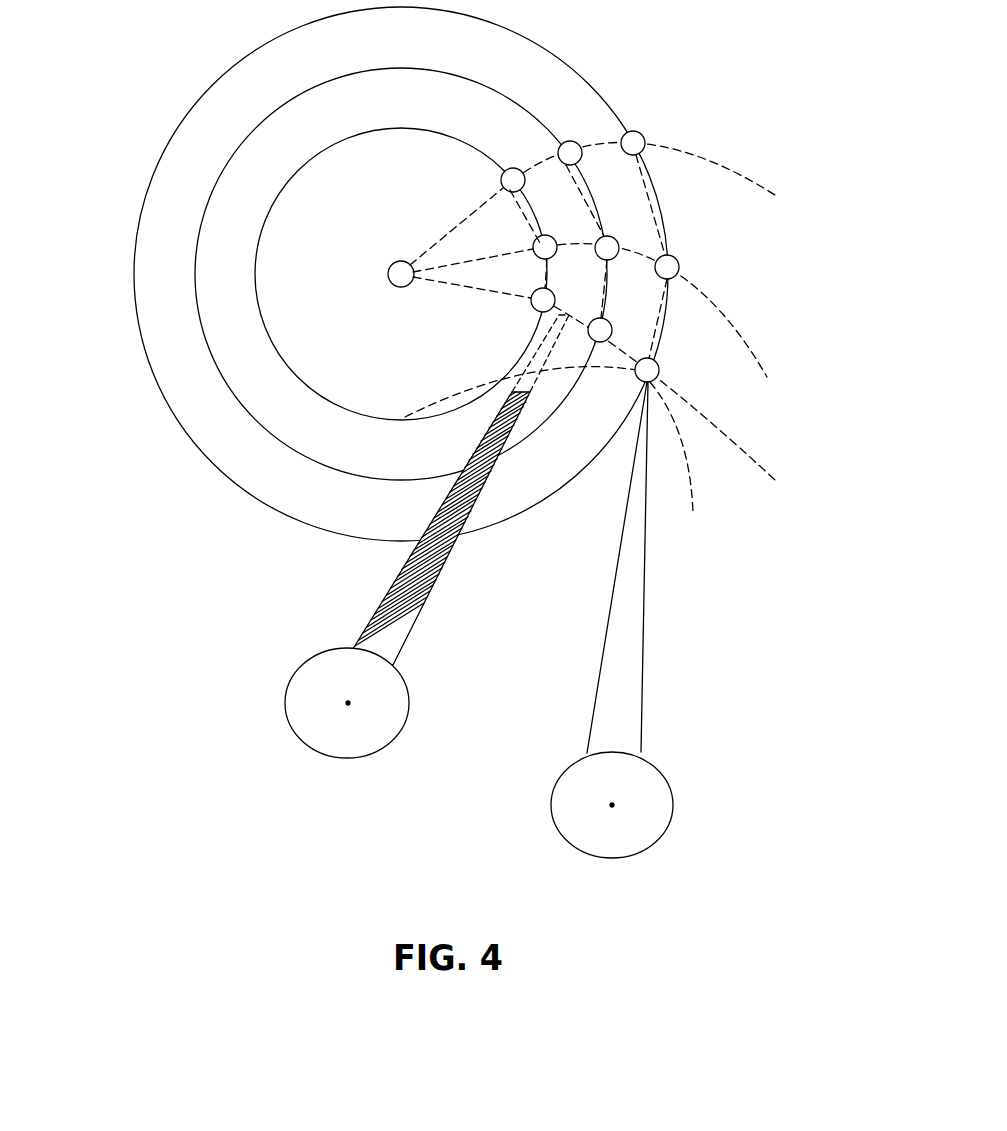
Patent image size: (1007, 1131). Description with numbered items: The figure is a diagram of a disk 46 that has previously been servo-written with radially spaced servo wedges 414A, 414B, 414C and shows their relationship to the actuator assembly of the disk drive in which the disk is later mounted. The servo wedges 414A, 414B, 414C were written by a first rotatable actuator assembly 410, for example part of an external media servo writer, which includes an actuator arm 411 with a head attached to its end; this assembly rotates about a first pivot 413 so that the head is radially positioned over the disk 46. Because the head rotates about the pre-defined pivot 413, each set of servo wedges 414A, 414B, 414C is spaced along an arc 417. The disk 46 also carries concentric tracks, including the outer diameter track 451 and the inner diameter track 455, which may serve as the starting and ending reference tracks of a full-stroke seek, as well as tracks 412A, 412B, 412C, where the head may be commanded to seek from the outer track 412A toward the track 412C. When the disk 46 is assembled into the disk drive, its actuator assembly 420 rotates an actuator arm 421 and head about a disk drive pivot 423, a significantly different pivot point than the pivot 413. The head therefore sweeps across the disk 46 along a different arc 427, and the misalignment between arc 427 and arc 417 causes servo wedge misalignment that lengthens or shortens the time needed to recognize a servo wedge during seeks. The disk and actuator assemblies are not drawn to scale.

The disk 46 is at (200, 56).
The outer diameter track 451 is at (147, 357).
The inner diameter track 455 is at (392, 262).
The arc 417 is at (487, 290).
The outer diameter track 412A is at (665, 228).
The track 412B is at (600, 218).
The track 412C is at (533, 207).
The servo wedge 414A is at (660, 368).
The servo wedge 414B is at (612, 330).
The servo wedge 414C is at (556, 301).
The arc 427 is at (777, 460).
The first actuator assembly 410 is at (389, 536).
The actuator arm 411 is at (390, 615).
The first pivot 413 is at (348, 703).
The actuator assembly 420 is at (663, 620).
The actuator arm 421 is at (645, 632).
The disk drive pivot 423 is at (612, 805).